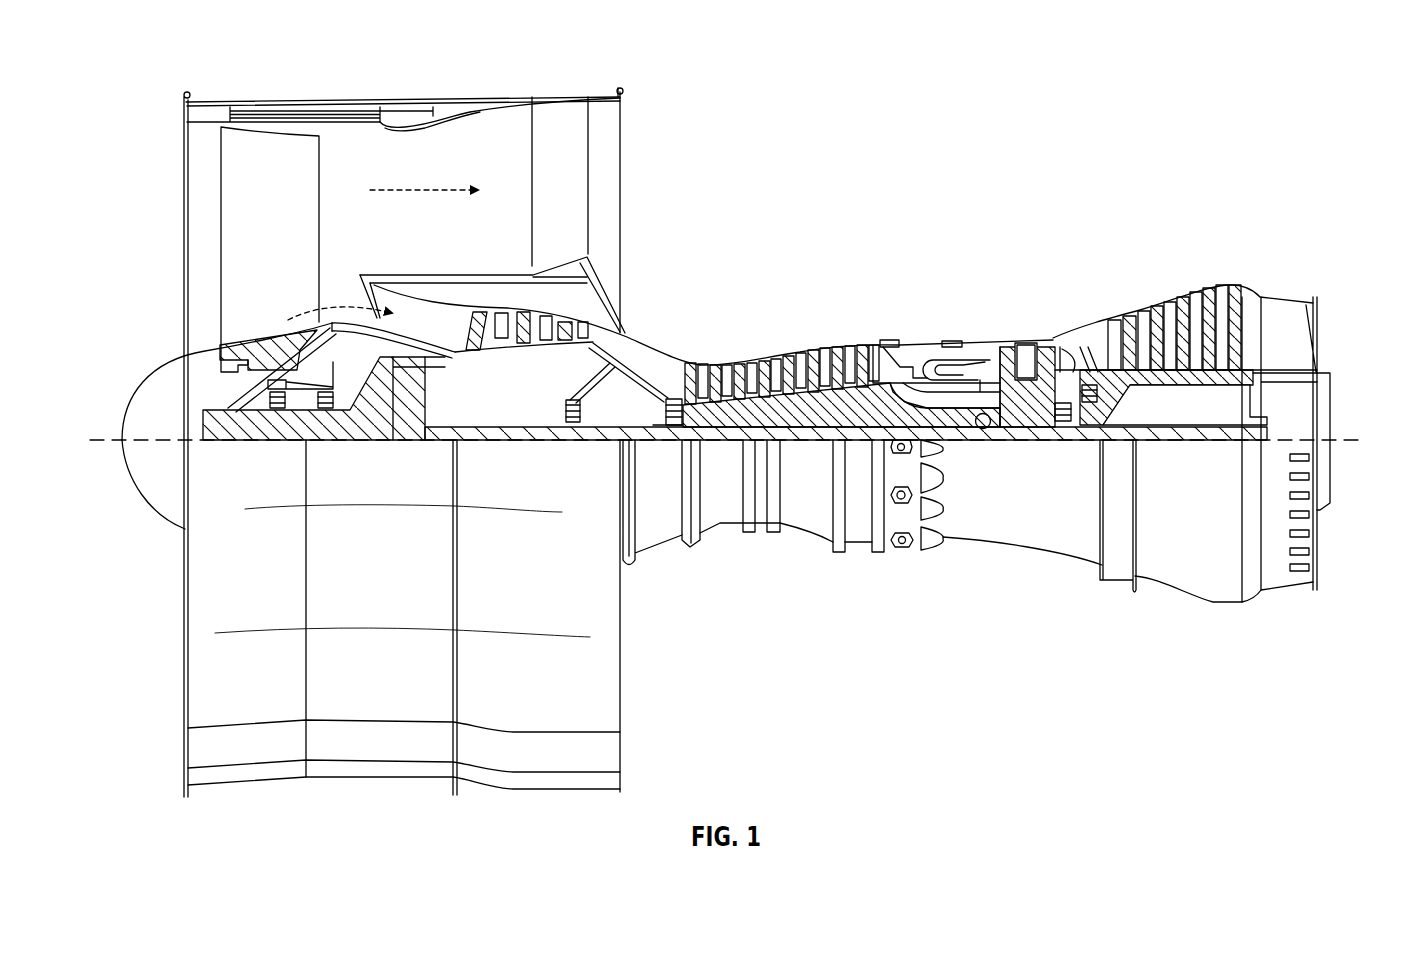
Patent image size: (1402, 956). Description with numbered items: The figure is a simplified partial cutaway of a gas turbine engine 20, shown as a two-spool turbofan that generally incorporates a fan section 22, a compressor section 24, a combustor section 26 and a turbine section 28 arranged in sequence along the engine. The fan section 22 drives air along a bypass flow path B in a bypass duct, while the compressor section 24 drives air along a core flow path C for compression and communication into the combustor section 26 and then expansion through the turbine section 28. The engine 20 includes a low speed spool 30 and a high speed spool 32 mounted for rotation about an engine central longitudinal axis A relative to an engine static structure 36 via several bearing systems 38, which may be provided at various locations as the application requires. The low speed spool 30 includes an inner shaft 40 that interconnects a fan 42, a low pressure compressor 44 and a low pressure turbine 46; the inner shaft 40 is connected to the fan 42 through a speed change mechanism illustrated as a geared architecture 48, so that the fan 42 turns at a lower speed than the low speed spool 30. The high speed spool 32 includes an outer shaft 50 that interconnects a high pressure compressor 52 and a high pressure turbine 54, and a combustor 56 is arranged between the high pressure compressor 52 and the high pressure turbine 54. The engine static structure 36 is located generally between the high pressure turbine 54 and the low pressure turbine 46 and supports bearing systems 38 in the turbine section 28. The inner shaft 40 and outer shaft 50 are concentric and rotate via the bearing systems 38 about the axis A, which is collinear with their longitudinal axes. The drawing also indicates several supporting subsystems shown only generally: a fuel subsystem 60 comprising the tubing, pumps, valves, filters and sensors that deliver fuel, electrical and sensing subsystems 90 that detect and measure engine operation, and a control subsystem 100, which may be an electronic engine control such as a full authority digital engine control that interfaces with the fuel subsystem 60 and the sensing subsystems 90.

The gas turbine engine 20 is at (1097, 146).
The fan section 22 is at (282, 86).
The compressor section 24 is at (802, 278).
The combustor section 26 is at (957, 276).
The turbine section 28 is at (1130, 276).
The low speed spool 30 is at (820, 452).
The high speed spool 32 is at (873, 423).
The engine static structure 36 is at (868, 556).
The bearing systems 38 is at (274, 410).
The inner shaft 40 is at (640, 441).
The fan 42 is at (265, 222).
The low pressure compressor 44 is at (540, 314).
The low pressure turbine 46 is at (1180, 310).
The geared architecture 48 is at (407, 410).
The outer shaft 50 is at (987, 432).
The high pressure compressor 52 is at (787, 408).
The high pressure turbine 54 is at (1024, 343).
The combustor 56 is at (945, 367).
The fuel subsystem 60 is at (832, 722).
The electrical and sensing subsystems 90 is at (966, 722).
The control subsystem 100 is at (1136, 722).
The engine central longitudinal axis A is at (1340, 438).
The bypass flow path B is at (429, 188).
The core flow path C is at (304, 308).